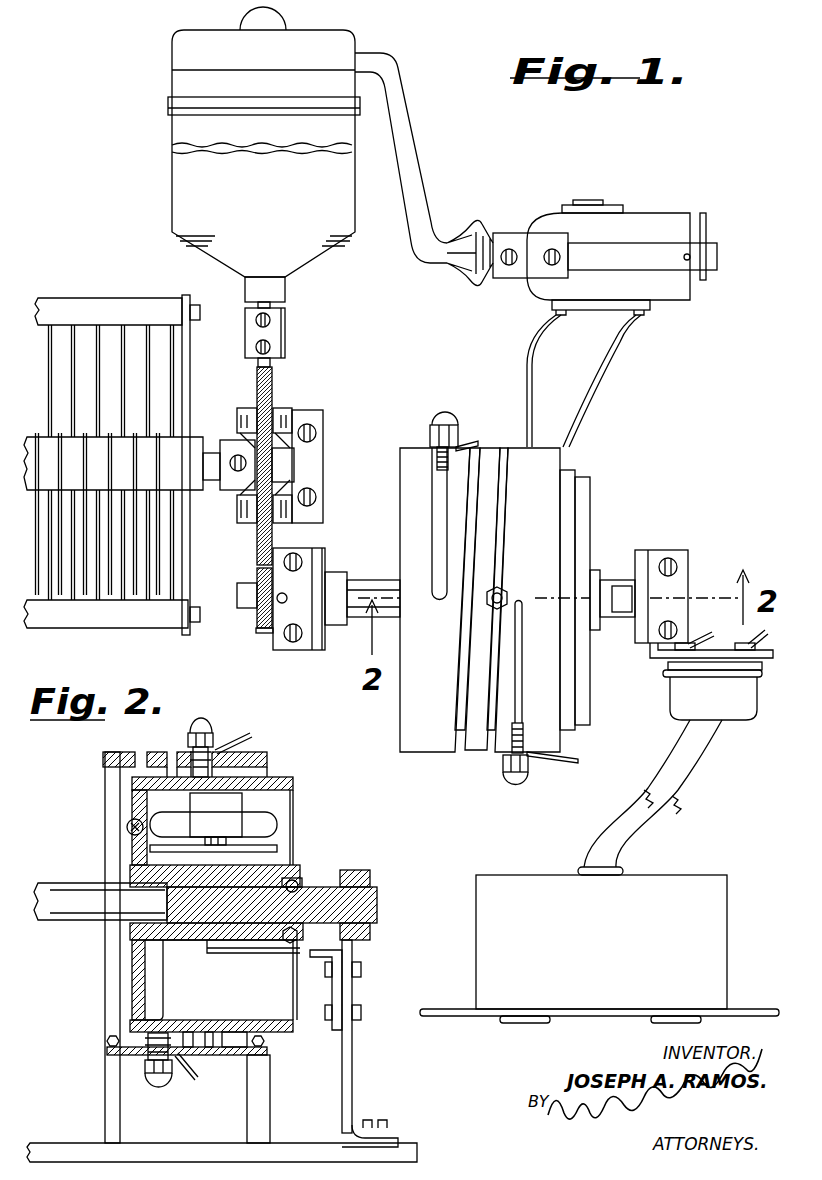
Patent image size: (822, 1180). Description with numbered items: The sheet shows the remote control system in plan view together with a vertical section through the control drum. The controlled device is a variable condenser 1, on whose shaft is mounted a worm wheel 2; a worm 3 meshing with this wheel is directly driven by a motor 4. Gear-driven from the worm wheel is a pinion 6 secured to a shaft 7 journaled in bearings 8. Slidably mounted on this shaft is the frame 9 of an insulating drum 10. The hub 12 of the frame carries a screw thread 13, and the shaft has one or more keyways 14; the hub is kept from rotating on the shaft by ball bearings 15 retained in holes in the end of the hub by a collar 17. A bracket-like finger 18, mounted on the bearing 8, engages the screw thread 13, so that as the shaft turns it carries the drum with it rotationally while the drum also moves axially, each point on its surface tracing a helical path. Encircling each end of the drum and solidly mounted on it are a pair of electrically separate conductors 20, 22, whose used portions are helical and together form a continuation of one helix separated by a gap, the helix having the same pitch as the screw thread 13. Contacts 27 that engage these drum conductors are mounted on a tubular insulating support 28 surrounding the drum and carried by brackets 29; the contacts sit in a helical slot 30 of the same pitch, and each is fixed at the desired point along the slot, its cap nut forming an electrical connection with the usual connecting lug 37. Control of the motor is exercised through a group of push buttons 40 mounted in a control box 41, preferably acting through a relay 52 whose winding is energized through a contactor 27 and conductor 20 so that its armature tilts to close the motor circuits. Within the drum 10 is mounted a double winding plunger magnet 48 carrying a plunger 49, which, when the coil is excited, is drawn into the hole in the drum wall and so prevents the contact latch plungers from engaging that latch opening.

In FIG. 1, the variable condenser 1 is at (164, 640).
In FIG. 1, the worm wheel 2 is at (274, 374).
In FIG. 1, the worm 3 is at (311, 440).
In FIG. 1, the motor 4 is at (316, 252).
In FIG. 1, the pinion 6 is at (263, 636).
In FIG. 1, the shaft 7 is at (243, 612).
In FIG. 2, the shaft 7 is at (378, 907).
In FIG. 1, the bearings 8 is at (299, 651).
In FIG. 2, the bearings 8 is at (353, 1062).
In FIG. 2, the frame 9 is at (146, 976).
In FIG. 1, the insulating drum 10 is at (590, 489).
In FIG. 2, the insulating drum 10 is at (294, 796).
In FIG. 2, the hub 12 is at (287, 873).
In FIG. 2, the screw thread 13 is at (275, 942).
In FIG. 1, the keyways 14 is at (627, 612).
In FIG. 2, the keyways 14 is at (328, 880).
In FIG. 2, the ball bearings 15 is at (305, 877).
In FIG. 2, the collar 17 is at (300, 943).
In FIG. 2, the bracket-like finger 18 is at (342, 992).
In FIG. 2, the conductor 20 is at (198, 1026).
In FIG. 1, the conductor 22 is at (570, 473).
In FIG. 2, the conductor 22 is at (277, 1038).
In FIG. 1, the contacts 27 is at (443, 412).
In FIG. 2, the contacts 27 is at (214, 738).
In FIG. 1, the tubular insulating support 28 is at (425, 744).
In FIG. 2, the tubular insulating support 28 is at (268, 758).
In FIG. 2, the brackets 29 is at (248, 1117).
In FIG. 1, the helical slot 30 is at (461, 750).
In FIG. 2, the helical slot 30 is at (214, 1052).
In FIG. 1, the connecting lug 37 is at (479, 445).
In FIG. 1, the push buttons 40 is at (530, 1024).
In FIG. 1, the control box 41 is at (690, 929).
In FIG. 2, the double winding plunger magnet 48 is at (271, 833).
In FIG. 2, the plunger 49 is at (218, 790).
In FIG. 1, the relay 52 is at (637, 215).